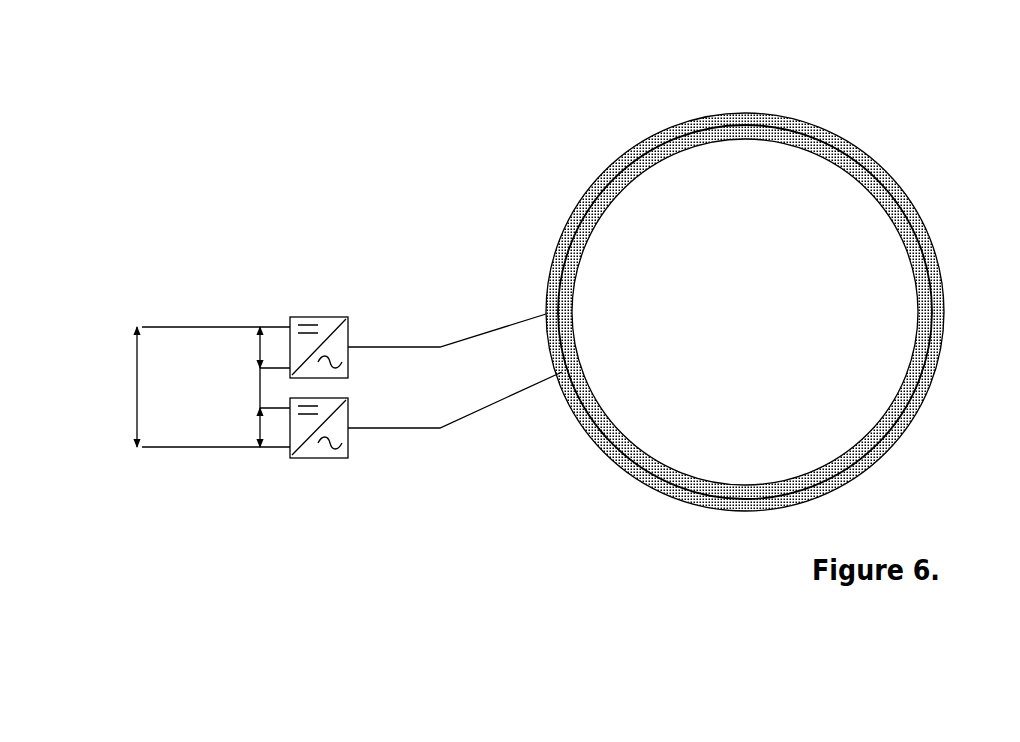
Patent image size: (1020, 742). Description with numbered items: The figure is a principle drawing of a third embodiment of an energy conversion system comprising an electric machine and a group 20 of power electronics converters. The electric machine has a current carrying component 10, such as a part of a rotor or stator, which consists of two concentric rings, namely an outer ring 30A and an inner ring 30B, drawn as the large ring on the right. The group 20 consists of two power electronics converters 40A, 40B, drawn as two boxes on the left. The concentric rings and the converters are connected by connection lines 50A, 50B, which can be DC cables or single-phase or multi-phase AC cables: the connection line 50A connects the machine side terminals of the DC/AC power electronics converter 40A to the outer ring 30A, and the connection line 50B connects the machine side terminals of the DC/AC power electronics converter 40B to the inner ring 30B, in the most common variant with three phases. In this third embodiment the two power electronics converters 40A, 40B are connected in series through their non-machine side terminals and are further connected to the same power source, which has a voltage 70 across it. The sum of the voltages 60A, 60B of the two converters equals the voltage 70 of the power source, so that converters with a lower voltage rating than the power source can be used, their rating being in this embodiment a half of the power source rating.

The current carrying component 10 is at (731, 288).
The group of power electronics converters 20 is at (303, 331).
The outer ring 30A is at (834, 143).
The inner ring 30B is at (862, 175).
The power electronics converter 40A is at (323, 313).
The power electronics converter 40B is at (352, 445).
The connection line 50A is at (368, 345).
The connection line 50B is at (366, 428).
The voltage 60A is at (256, 343).
The voltage 60B is at (257, 426).
The voltage 70 is at (132, 392).